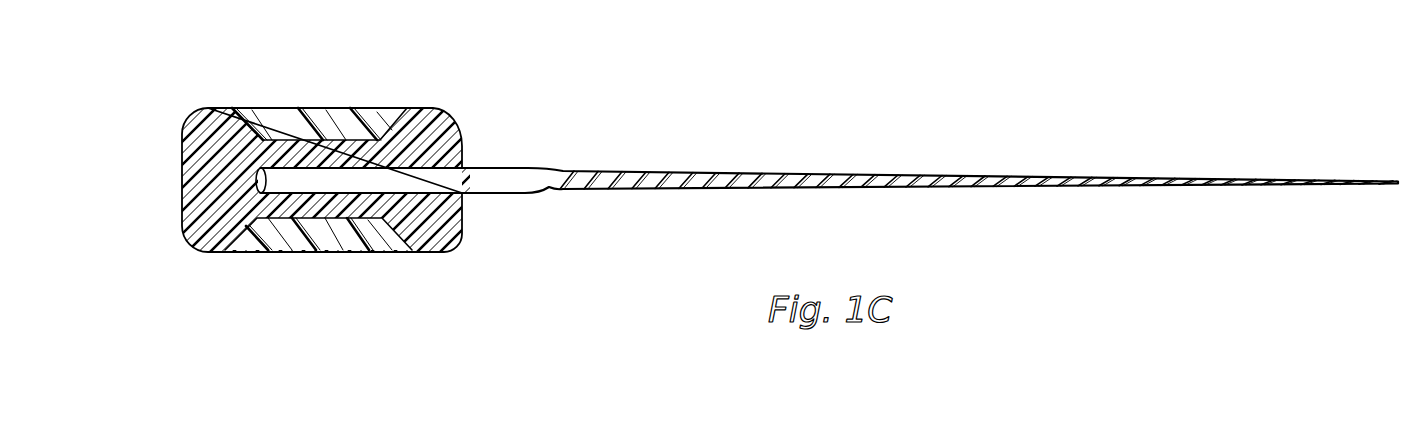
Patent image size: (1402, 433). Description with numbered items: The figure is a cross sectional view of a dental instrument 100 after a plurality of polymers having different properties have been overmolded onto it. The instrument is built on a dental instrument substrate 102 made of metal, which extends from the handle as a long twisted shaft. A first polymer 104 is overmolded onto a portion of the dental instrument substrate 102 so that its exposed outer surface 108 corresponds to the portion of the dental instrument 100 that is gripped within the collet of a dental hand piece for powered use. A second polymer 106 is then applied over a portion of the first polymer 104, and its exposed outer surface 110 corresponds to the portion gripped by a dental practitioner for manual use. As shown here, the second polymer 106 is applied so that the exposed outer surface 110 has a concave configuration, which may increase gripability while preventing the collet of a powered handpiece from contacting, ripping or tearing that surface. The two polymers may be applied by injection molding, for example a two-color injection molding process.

The dental instrument 100 is at (157, 110).
The dental instrument substrate 102 is at (844, 172).
The first polymer 104 is at (463, 145).
The second polymer 106 is at (358, 110).
The exposed outer surface of the first polymer 108 is at (202, 108).
The exposed outer surface of the second polymer 110 is at (290, 108).